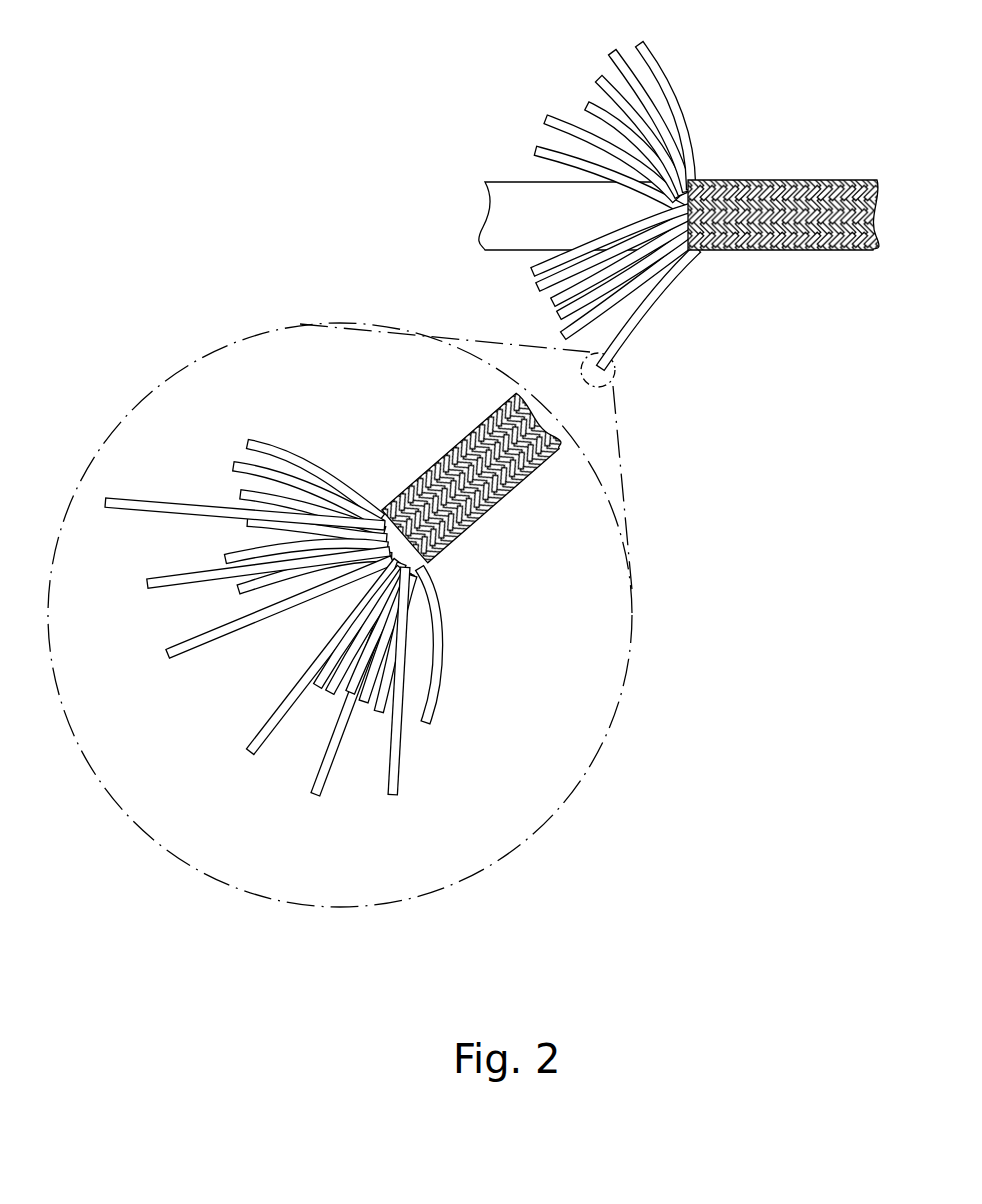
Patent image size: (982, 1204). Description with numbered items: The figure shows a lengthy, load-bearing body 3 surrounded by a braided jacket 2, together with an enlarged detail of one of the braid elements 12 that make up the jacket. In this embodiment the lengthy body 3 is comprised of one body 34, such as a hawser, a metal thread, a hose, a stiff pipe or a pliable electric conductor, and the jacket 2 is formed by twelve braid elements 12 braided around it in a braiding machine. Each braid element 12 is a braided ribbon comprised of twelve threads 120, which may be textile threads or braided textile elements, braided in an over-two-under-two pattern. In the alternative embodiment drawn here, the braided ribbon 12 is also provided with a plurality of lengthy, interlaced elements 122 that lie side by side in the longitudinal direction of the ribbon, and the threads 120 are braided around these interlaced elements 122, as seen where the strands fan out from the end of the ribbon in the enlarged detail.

The jacket 2 is at (866, 181).
The lengthy, load-bearing body 3 is at (524, 192).
The braid element 12 is at (454, 432).
The body 34 is at (491, 250).
The threads 120 is at (440, 665).
The lengthy, interlaced elements 122 is at (147, 503).